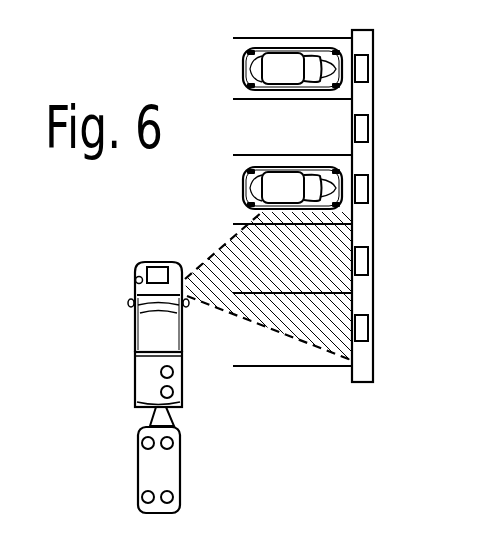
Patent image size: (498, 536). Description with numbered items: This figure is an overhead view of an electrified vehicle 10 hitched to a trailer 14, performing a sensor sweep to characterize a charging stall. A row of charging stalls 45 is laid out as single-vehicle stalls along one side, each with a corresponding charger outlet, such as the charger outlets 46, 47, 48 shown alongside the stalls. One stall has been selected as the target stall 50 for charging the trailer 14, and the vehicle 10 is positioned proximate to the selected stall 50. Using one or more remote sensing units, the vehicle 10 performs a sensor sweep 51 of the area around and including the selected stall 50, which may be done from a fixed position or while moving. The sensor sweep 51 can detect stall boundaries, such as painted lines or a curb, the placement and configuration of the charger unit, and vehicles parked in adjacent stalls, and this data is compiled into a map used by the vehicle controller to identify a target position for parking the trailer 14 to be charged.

The vehicle 10 is at (124, 325).
The trailer 14 is at (126, 463).
The row of charging stalls 45 is at (352, 390).
The charger outlet 46 is at (373, 332).
The charger outlet 47 is at (373, 253).
The charger outlet 48 is at (373, 182).
The selected stall 50 is at (233, 257).
The sensor sweep 51 is at (233, 312).